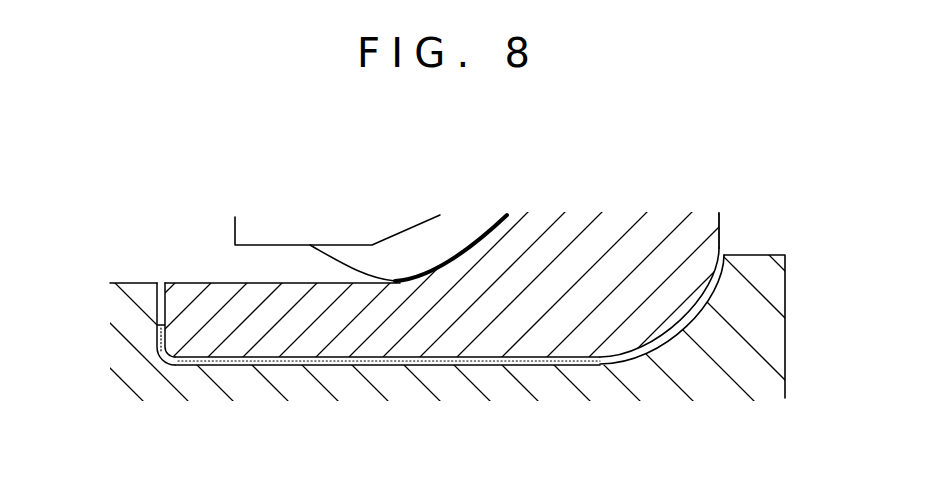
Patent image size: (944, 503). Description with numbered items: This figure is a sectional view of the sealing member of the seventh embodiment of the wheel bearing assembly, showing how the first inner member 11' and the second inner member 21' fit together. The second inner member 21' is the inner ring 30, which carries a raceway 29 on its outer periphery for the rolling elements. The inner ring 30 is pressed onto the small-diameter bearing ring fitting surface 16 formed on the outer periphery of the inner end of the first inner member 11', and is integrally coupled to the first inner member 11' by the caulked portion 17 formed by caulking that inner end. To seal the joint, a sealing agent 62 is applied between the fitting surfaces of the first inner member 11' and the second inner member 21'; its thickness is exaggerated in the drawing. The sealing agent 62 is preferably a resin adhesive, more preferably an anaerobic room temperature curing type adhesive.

The first inner member 11' is at (132, 269).
The second inner member 21' is at (793, 189).
The caulked portion 17 is at (768, 278).
The sealing agent 62 is at (337, 367).
The raceway 29 is at (413, 277).
The inner ring 30 is at (507, 330).
The bearing ring fitting surface 16 is at (605, 358).